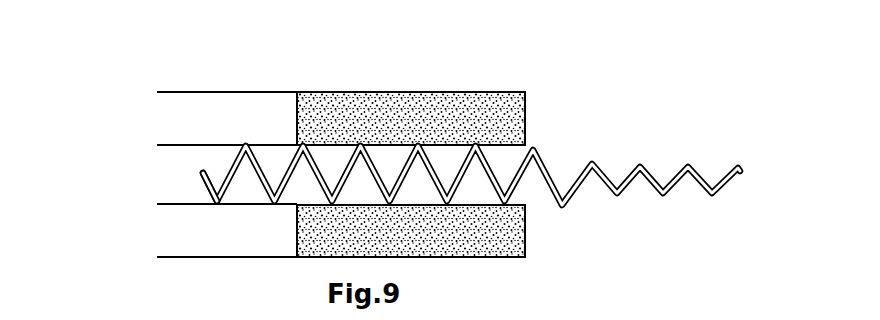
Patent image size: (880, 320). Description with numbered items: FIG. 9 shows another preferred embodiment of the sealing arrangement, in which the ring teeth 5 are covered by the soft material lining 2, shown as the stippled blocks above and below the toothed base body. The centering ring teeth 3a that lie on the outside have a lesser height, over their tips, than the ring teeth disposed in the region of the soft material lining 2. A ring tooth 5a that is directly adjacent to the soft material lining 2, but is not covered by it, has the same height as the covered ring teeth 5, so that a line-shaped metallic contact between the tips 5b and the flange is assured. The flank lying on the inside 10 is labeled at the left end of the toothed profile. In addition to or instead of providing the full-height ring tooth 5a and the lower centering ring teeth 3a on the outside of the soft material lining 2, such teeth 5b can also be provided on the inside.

The soft material lining 2 is at (363, 110).
The ring teeth covered with soft material linings 5 is at (420, 146).
The ring tooth 5a is at (553, 175).
The tips 5b is at (246, 145).
The centering ring teeth 3a is at (592, 163).
The flank lying on the inside 10 is at (200, 184).